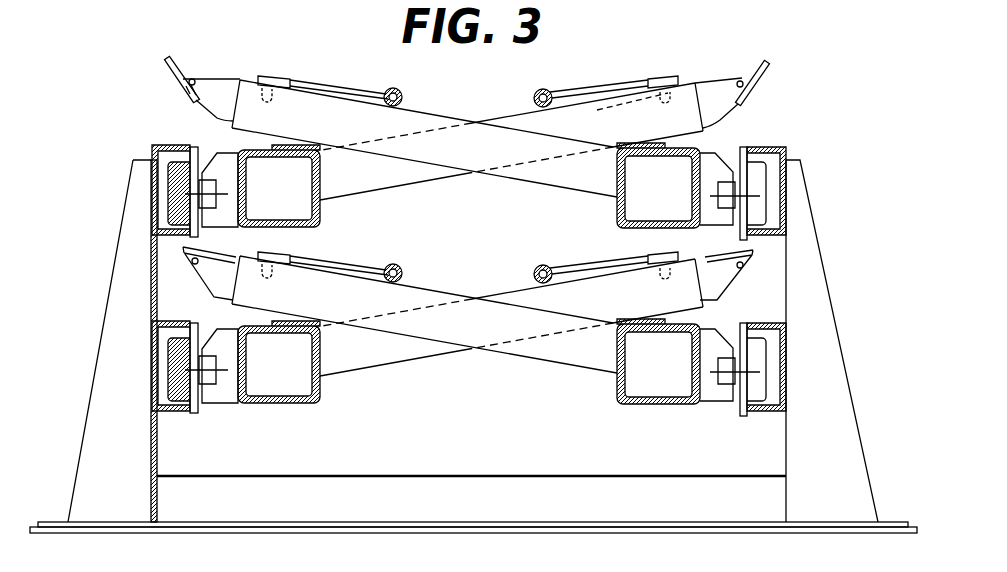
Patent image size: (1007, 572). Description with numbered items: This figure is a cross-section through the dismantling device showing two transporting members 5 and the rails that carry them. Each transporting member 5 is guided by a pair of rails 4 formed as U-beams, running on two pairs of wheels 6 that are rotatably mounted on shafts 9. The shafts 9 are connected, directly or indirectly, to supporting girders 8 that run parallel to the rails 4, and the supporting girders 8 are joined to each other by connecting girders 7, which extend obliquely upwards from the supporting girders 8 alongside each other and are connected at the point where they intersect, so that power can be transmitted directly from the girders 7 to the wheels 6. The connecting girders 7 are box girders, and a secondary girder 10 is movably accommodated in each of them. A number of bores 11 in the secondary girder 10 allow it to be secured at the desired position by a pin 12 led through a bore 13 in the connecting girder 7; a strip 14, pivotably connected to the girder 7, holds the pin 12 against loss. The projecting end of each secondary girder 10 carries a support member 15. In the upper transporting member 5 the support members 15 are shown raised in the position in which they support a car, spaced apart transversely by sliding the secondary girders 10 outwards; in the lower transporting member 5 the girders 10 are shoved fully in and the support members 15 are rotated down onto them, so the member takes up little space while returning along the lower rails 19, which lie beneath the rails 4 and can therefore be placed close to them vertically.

The rails 4 is at (793, 148).
The transporting member 5 is at (481, 110).
The wheels 6 is at (757, 215).
The connecting girders 7 is at (417, 183).
The supporting girders 8 is at (697, 150).
The shafts 9 is at (752, 196).
The secondary girder 10 is at (219, 79).
The bores 11 is at (610, 80).
The pin 12 is at (705, 105).
The bore 13 is at (672, 80).
The strip 14 is at (578, 90).
The support member 15 is at (724, 46).
The rails 19 is at (786, 327).